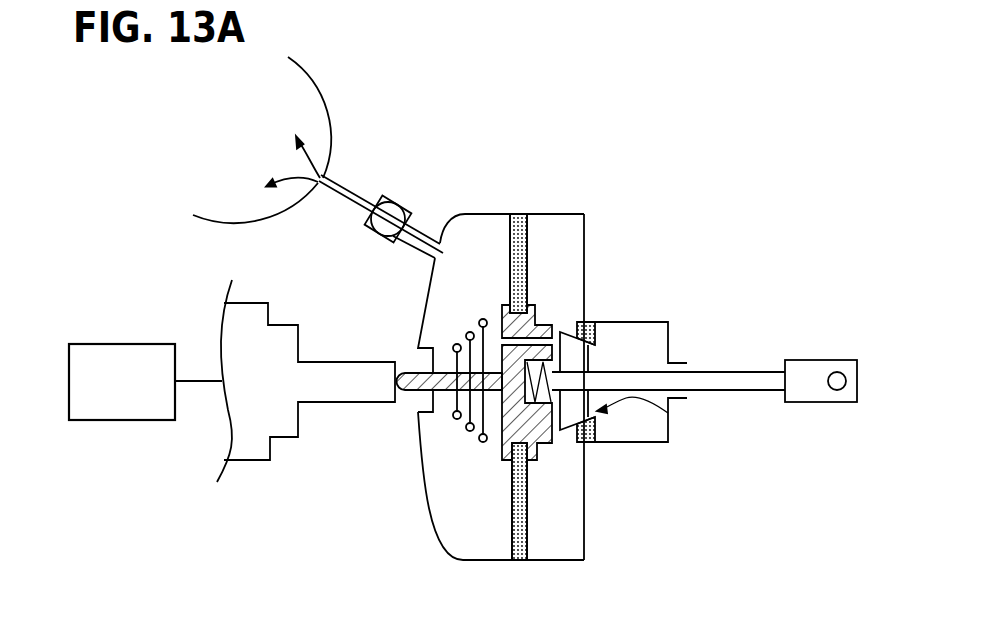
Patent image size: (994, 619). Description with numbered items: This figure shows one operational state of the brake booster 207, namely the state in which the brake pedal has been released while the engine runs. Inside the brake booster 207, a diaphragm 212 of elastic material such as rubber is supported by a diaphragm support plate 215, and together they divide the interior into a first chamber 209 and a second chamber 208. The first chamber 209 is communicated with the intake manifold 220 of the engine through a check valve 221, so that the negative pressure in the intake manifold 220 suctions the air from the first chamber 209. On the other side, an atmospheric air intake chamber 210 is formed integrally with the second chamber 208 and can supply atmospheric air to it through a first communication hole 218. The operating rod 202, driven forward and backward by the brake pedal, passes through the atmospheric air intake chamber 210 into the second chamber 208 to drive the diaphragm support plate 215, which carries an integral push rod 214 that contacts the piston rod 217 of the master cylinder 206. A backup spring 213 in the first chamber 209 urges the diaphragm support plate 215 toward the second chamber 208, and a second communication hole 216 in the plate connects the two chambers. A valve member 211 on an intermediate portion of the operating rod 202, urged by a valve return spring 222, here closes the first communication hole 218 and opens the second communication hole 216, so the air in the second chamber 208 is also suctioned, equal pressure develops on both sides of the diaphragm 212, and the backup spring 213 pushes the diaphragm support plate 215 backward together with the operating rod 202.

The operating rod 202 is at (725, 378).
The master cylinder 206 is at (150, 422).
The brake booster 207 is at (562, 214).
The second chamber 208 is at (577, 257).
The first chamber 209 is at (445, 523).
The atmospheric air intake chamber 210 is at (645, 442).
The valve member 211 is at (587, 360).
The diaphragm 212 is at (528, 233).
The backup spring 213 is at (452, 408).
The push rod 214 is at (408, 372).
The diaphragm support plate 215 is at (548, 444).
The second communication hole 216 is at (500, 337).
The piston rod 217 is at (343, 399).
The first communication hole 218 is at (668, 415).
The intake manifold 220 is at (328, 112).
The check valve 221 is at (411, 206).
The valve return spring 222 is at (561, 411).